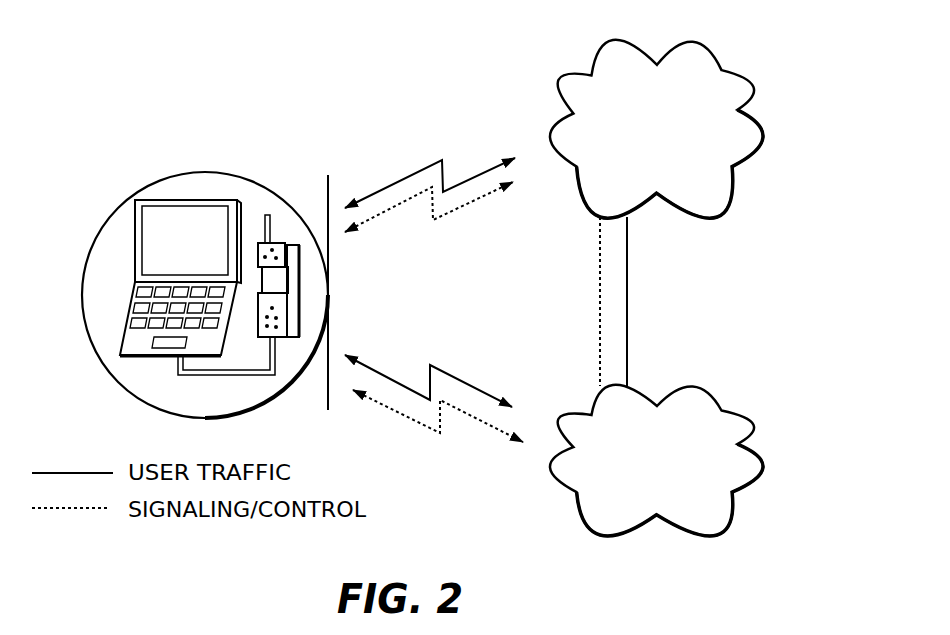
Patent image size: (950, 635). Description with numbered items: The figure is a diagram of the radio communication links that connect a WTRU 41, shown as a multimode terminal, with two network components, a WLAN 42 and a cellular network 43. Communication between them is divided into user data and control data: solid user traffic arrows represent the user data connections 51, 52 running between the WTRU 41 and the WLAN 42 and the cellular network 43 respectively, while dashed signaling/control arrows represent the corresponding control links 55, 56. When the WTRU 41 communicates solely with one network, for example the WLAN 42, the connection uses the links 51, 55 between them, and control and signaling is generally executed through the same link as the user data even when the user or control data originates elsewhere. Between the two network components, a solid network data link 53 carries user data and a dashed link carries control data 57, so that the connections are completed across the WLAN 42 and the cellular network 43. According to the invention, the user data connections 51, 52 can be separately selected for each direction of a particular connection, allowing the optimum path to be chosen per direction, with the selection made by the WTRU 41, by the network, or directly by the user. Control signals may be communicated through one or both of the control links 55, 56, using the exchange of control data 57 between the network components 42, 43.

The WTRU 41 is at (116, 210).
The WLAN 42 is at (753, 80).
The cellular network 43 is at (740, 407).
The user data connection 51 is at (418, 170).
The user data connection 52 is at (395, 380).
The network data link 53 is at (627, 280).
The control link 55 is at (397, 203).
The control link 56 is at (418, 423).
The control data link 57 is at (600, 295).